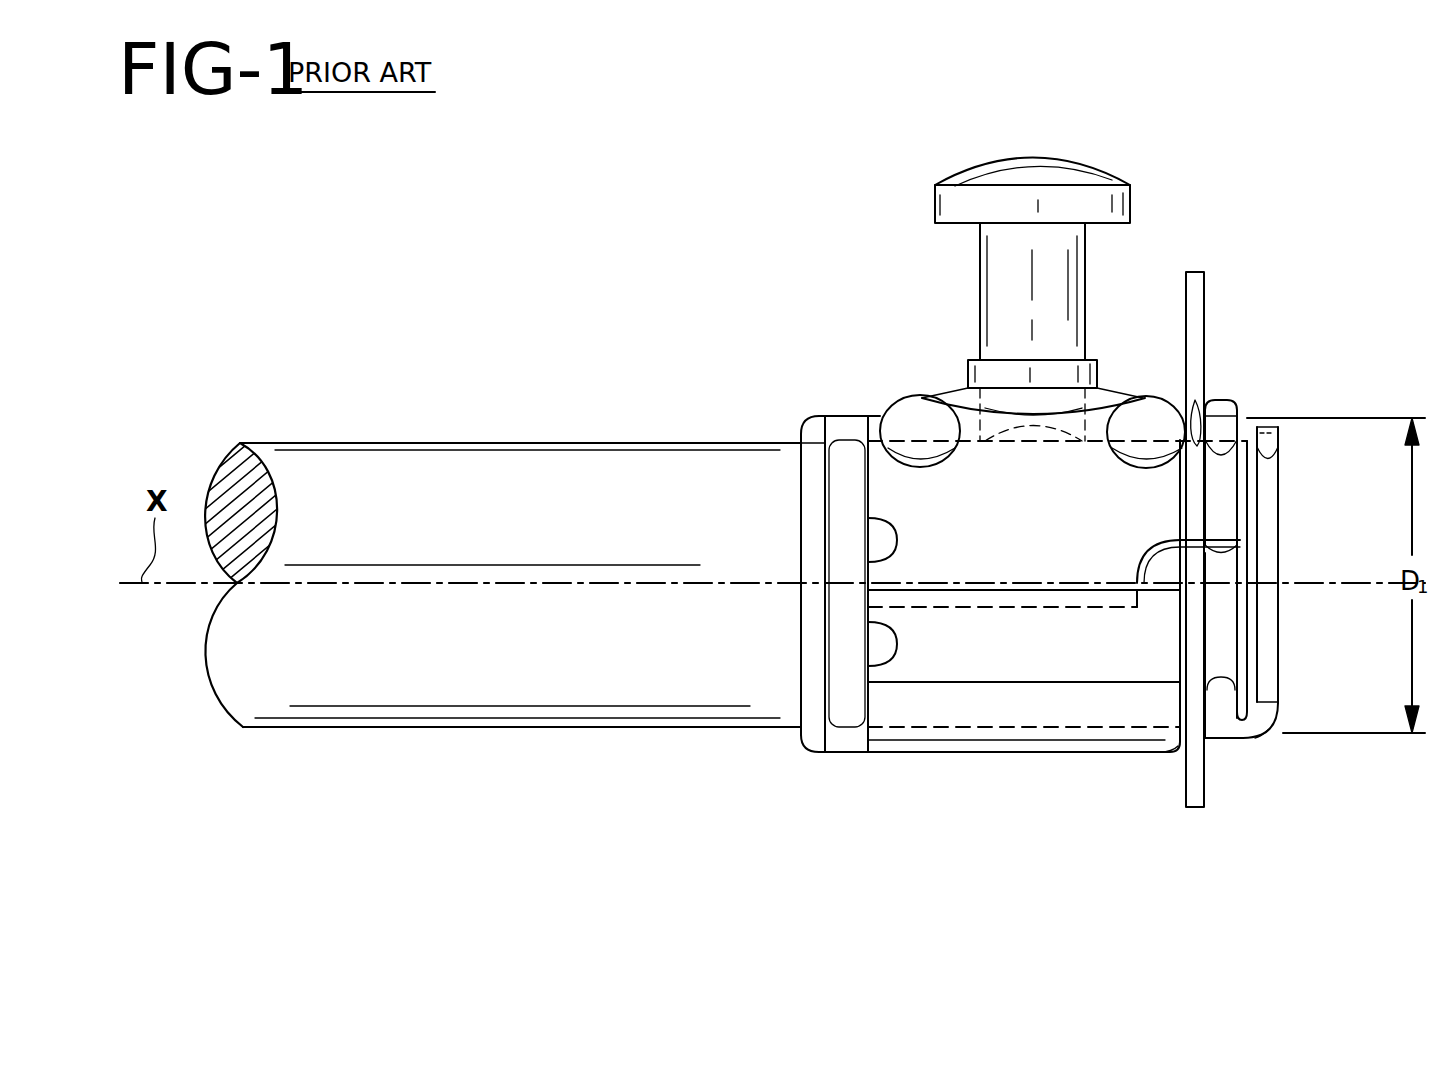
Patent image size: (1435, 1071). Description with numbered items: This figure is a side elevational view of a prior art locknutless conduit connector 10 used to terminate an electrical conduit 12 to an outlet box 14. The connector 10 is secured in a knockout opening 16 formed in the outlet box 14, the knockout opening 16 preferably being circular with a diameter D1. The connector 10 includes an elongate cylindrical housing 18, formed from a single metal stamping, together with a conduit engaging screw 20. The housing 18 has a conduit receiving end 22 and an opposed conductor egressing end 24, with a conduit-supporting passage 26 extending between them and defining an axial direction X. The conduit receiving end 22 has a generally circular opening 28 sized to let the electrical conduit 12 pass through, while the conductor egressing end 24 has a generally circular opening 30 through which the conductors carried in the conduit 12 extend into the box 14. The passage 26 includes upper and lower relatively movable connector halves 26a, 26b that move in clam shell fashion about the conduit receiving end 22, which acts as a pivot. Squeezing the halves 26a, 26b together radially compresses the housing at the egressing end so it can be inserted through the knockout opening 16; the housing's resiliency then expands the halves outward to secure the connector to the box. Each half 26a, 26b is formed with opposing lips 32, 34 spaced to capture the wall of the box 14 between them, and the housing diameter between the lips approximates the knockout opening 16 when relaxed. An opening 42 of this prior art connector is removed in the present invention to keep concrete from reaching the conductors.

The locknutless conduit connector 10 is at (738, 205).
The electrical conduit 12 is at (478, 425).
The outlet box 14 is at (1205, 292).
The knockout opening 16 is at (1200, 410).
The housing 18 is at (847, 360).
The conduit engaging screw 20 is at (935, 260).
The conduit receiving end 22 is at (801, 677).
The conductor egressing end 24 is at (1295, 755).
The conduit-supporting passage 26 is at (1000, 775).
The upper connector half 26a is at (868, 558).
The lower connector half 26b is at (868, 622).
The circular opening 28 is at (744, 432).
The circular opening 30 is at (1292, 460).
The lip 32 is at (1187, 440).
The lip 34 is at (1220, 403).
The opening 42 is at (1170, 564).